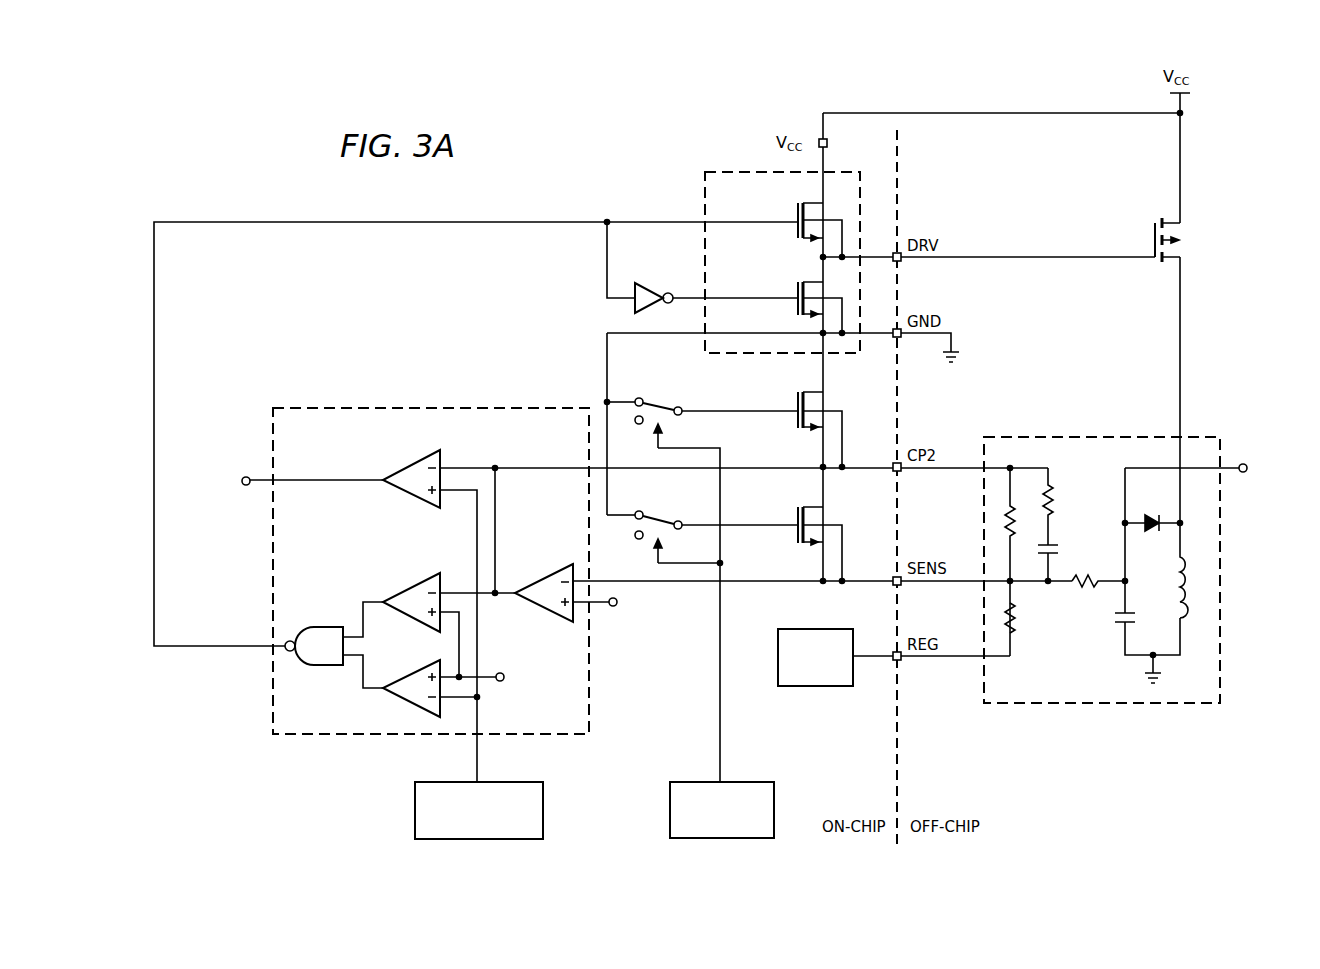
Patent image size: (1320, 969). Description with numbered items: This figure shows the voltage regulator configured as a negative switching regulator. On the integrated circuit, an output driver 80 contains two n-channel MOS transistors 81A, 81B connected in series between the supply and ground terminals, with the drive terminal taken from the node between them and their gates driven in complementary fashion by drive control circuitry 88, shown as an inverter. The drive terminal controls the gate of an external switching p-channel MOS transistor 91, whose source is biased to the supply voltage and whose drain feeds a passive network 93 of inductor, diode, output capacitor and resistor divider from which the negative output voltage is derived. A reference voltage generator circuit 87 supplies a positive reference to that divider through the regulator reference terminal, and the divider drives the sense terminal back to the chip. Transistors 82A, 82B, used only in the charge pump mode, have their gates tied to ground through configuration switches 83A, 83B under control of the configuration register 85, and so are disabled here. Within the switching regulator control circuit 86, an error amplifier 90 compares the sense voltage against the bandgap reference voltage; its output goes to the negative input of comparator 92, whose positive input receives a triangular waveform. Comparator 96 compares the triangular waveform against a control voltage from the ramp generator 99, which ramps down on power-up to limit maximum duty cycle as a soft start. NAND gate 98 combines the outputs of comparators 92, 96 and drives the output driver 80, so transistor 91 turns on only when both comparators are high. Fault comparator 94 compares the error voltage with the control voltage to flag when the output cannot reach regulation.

The output driver 80 is at (733, 236).
The n-channel MOS transistor 81A is at (793, 211).
The n-channel MOS transistor 81B is at (793, 289).
The n-channel MOS transistor 82A is at (795, 403).
The n-channel MOS transistor 82B is at (795, 518).
The configuration switch 83A is at (676, 397).
The configuration switch 83B is at (676, 511).
The configuration register 85 is at (670, 812).
The switching regulator control circuit 86 is at (403, 502).
The reference voltage generator circuit 87 is at (815, 687).
The drive control circuitry 88 is at (659, 282).
The error amplifier 90 is at (542, 573).
The switching p-channel MOS transistor 91 is at (1153, 227).
The comparator 92 is at (415, 584).
The passive network 93 is at (1110, 704).
The fault comparator 94 is at (415, 463).
The comparator 96 is at (415, 671).
The NAND gate 98 is at (319, 667).
The ramp generator 99 is at (415, 812).